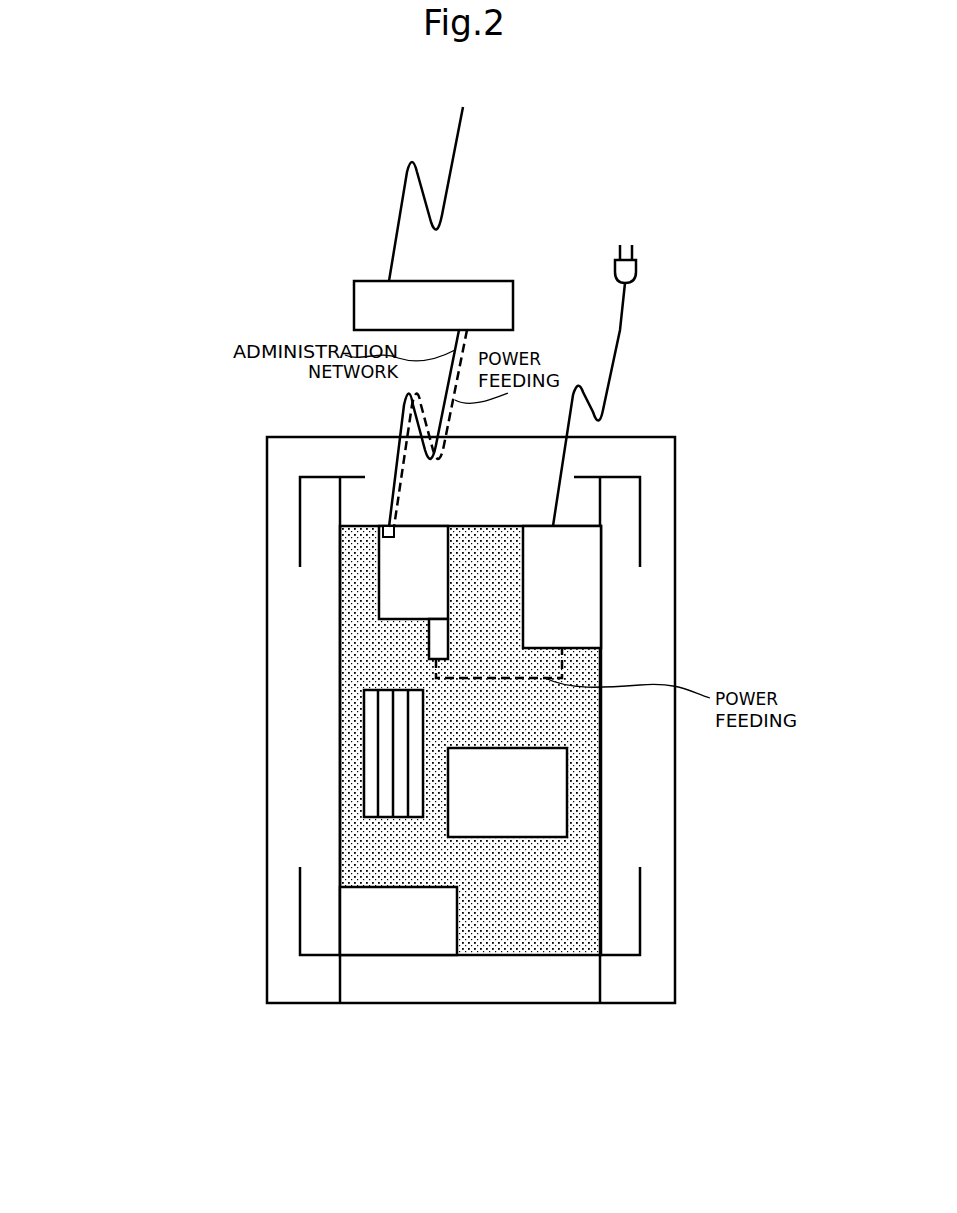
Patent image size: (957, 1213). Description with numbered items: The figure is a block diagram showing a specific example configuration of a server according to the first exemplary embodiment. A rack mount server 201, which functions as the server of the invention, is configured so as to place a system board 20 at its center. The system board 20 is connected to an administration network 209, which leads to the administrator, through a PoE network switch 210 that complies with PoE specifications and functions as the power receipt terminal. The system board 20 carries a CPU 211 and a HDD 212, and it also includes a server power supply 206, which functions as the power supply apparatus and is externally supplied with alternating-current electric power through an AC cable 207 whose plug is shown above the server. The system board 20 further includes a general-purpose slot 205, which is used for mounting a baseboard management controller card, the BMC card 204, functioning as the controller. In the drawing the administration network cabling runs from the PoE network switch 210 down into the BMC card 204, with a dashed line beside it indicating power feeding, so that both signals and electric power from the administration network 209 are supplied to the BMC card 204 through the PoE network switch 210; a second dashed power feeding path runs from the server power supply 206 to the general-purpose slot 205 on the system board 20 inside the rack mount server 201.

The rack mount server 201 is at (340, 838).
The system board 20 is at (601, 897).
The baseboard management controller (BMC) card 204 is at (383, 578).
The general-purpose slot 205 is at (429, 645).
The server power supply 206 is at (588, 577).
The AC cable 207 is at (617, 362).
The administration network 209 is at (398, 208).
The PoE network switch 210 is at (495, 280).
The CPU 211 is at (567, 815).
The HDD 212 is at (457, 930).